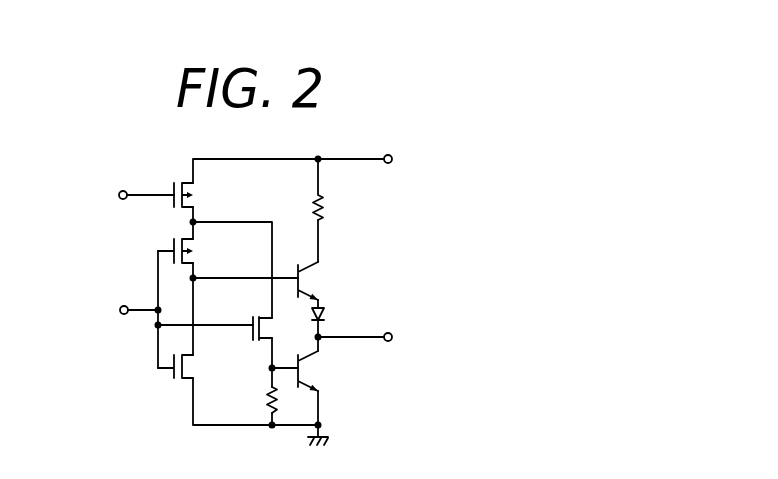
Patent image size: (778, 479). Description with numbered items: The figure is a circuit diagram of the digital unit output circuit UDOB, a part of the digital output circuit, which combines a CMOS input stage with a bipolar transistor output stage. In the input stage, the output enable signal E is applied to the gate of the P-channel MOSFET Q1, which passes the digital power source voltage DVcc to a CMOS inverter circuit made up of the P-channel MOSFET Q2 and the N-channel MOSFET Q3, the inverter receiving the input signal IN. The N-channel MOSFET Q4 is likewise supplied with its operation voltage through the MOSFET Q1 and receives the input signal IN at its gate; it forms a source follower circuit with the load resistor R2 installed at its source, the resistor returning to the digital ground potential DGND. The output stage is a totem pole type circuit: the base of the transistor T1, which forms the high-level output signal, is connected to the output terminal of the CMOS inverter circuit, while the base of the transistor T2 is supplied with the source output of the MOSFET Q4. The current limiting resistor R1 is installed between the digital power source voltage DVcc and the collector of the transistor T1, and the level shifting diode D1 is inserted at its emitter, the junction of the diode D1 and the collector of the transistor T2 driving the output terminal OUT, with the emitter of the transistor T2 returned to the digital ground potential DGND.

The P-channel MOSFET Q1 is at (201, 196).
The P-channel MOSFET Q2 is at (193, 253).
The N-channel MOSFET Q3 is at (191, 369).
The N-channel MOSFET Q4 is at (254, 313).
The current limiting resistor R1 is at (332, 191).
The load resistor R2 is at (258, 399).
The transistor T1 is at (322, 281).
The transistor T2 is at (321, 371).
The level shifting diode D1 is at (332, 316).
The digital unit output circuit UDOB is at (385, 230).
The output enable signal E is at (145, 182).
The input signal IN is at (137, 298).
The digital power source voltage DVcc is at (410, 160).
The output terminal OUT is at (373, 336).
The digital ground potential DGND is at (319, 448).